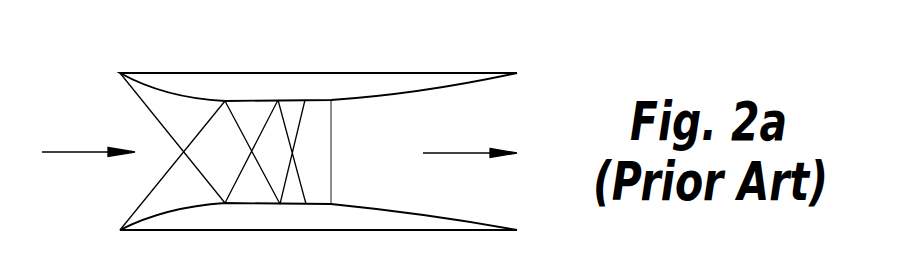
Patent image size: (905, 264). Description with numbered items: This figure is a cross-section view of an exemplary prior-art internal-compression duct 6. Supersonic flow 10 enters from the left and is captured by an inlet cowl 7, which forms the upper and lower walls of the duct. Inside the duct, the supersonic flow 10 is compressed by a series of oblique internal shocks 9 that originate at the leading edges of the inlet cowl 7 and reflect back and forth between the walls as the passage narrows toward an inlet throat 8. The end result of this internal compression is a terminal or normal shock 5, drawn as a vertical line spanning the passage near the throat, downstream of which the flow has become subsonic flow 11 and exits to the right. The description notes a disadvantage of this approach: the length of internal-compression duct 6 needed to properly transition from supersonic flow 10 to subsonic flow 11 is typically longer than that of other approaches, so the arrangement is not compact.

The terminal or normal shock 5 is at (332, 133).
The internal-compression duct 6 is at (390, 48).
The inlet cowl 7 is at (157, 73).
The inlet throat 8 is at (258, 100).
The oblique internal shocks 9 is at (143, 107).
The supersonic flow 10 is at (88, 164).
The subsonic flow 11 is at (470, 166).